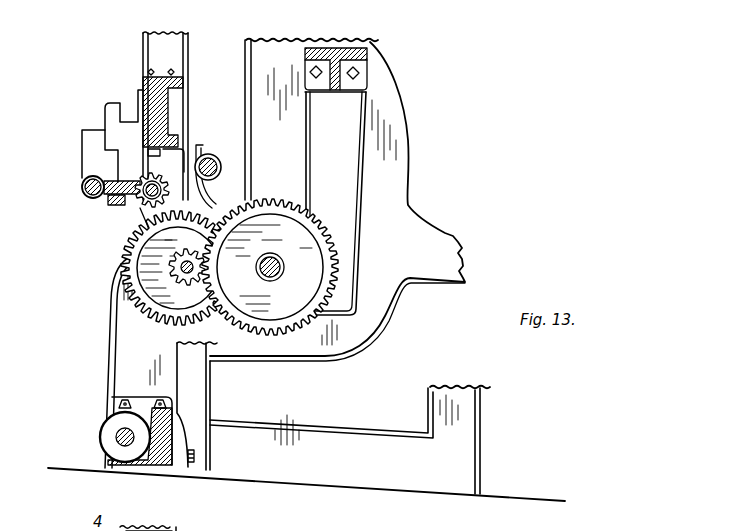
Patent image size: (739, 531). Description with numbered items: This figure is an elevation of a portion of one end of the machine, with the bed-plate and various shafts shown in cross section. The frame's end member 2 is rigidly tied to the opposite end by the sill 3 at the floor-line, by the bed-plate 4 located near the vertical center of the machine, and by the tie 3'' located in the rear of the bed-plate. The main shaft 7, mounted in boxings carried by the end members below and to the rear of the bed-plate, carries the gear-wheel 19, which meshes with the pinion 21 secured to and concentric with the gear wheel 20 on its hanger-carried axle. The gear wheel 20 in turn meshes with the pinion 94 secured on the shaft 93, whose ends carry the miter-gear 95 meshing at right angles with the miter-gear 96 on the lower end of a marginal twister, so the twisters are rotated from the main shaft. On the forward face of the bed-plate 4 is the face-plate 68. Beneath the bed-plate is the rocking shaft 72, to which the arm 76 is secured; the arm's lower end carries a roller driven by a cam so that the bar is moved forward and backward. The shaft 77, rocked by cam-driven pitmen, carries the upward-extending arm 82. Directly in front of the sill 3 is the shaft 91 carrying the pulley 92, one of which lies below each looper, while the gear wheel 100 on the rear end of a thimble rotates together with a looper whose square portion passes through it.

The end member 2 is at (306, 270).
The sill 3 is at (162, 420).
The tie 3'' is at (354, 177).
The bed-plate 4 is at (165, 109).
The main shaft 7 is at (282, 267).
The gear-wheel 19 is at (270, 249).
The gear wheel 20 is at (178, 280).
The pinion 21 is at (187, 280).
The face-plate 68 is at (126, 110).
The rocking shaft 72 is at (212, 157).
The arm 76 is at (214, 186).
The shaft 77 is at (82, 194).
The arm 82 is at (91, 153).
The shaft 91 is at (117, 440).
The pulley 92 is at (111, 423).
The shaft 93 is at (138, 205).
The pinion 94 is at (142, 182).
The miter-gear 95 is at (146, 226).
The miter-gear 96 is at (112, 205).
The gear wheel 100 is at (176, 527).